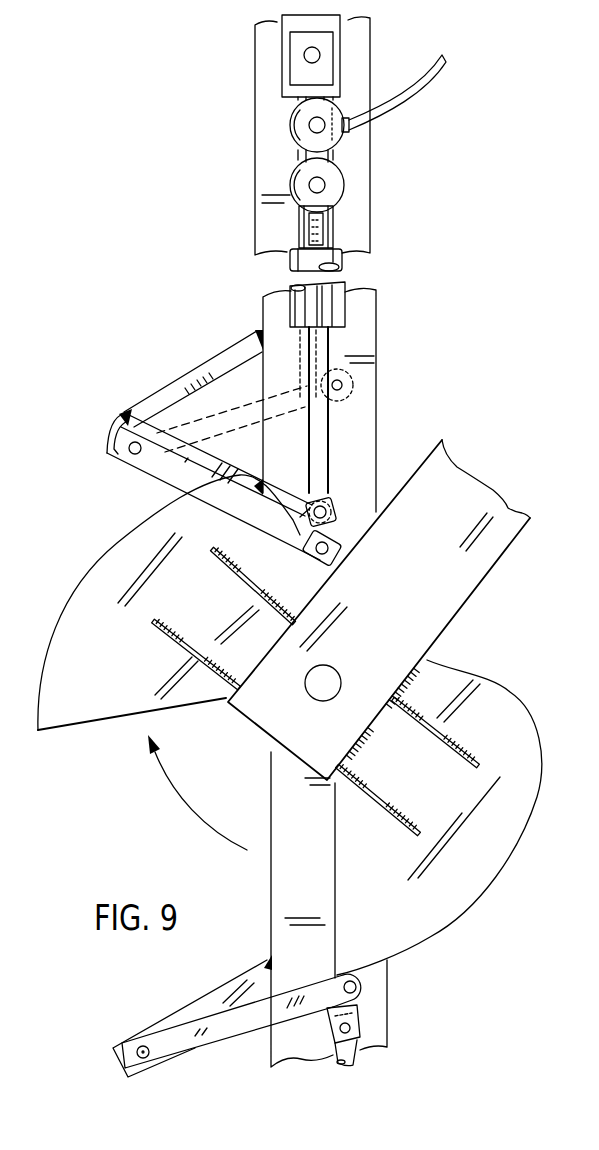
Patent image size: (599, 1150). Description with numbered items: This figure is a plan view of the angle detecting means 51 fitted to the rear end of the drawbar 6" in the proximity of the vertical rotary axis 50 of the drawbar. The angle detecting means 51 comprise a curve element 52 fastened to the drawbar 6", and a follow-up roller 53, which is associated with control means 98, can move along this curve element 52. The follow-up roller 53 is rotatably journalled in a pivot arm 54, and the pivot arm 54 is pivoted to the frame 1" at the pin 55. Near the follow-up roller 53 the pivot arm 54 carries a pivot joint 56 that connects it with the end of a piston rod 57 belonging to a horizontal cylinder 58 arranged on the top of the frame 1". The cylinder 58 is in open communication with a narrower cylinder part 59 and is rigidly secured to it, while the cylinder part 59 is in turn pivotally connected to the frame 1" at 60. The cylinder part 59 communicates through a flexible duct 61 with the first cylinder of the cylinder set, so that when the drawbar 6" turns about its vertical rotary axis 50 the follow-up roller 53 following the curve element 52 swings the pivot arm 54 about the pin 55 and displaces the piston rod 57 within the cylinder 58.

The frame 1 is at (372, 316).
The pivotal connection 60 is at (320, 55).
The flexible duct 61 is at (395, 108).
The cylinder part 59 is at (330, 150).
The horizontal cylinder 58 is at (327, 231).
The control means 98 is at (352, 279).
The piston rod 57 is at (327, 425).
The pivot joint 56 is at (335, 505).
The follow-up roller 53 is at (336, 540).
The pin 55 is at (128, 446).
The pivot arm 54 is at (153, 480).
The angle detecting means 51 is at (112, 572).
The drawbar 6 is at (485, 560).
The vertical rotary axis 50 is at (320, 698).
The curve element 52 is at (523, 778).